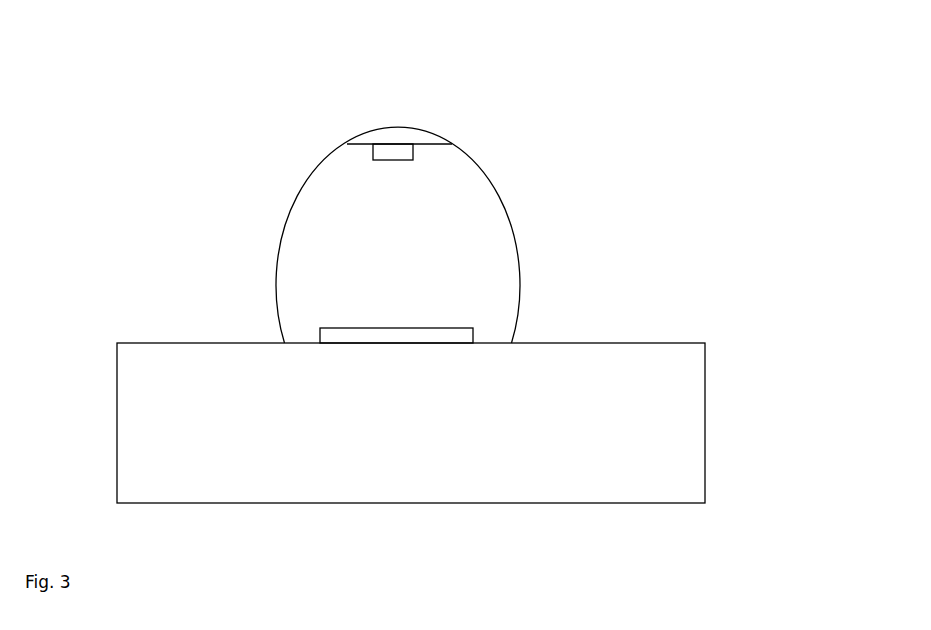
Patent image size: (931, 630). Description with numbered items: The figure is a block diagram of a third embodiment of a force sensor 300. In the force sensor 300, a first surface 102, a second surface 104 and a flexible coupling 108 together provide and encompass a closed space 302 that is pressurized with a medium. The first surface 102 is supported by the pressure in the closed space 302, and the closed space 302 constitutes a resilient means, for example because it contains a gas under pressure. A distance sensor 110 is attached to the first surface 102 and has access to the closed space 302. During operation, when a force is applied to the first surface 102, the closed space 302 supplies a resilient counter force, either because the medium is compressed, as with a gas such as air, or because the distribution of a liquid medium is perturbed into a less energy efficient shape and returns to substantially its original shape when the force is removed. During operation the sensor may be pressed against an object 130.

The force sensor 300 is at (797, 28).
The object 130 is at (650, 405).
The flexible coupling 108 is at (503, 213).
The closed space 302 is at (320, 275).
The second surface 104 is at (450, 337).
The first surface 102 is at (397, 139).
The distance sensor 110 is at (390, 152).